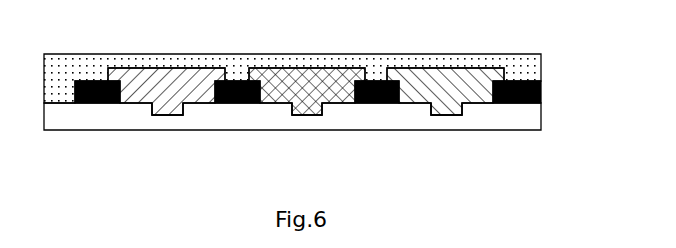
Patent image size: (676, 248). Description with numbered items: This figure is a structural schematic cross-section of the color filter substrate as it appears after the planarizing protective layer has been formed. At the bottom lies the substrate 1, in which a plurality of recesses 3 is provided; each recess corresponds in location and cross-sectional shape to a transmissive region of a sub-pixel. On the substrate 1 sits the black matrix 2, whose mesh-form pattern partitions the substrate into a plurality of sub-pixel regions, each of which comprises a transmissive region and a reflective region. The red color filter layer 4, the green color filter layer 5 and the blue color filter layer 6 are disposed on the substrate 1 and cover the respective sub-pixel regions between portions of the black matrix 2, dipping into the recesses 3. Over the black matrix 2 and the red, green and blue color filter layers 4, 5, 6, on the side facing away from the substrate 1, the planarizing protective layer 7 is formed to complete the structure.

The substrate 1 is at (543, 117).
The black matrix 2 is at (543, 92).
The recess 3 is at (172, 115).
The red color filter layer 4 is at (138, 70).
The green color filter layer 5 is at (278, 70).
The blue color filter layer 6 is at (411, 70).
The planarizing protective layer 7 is at (543, 65).